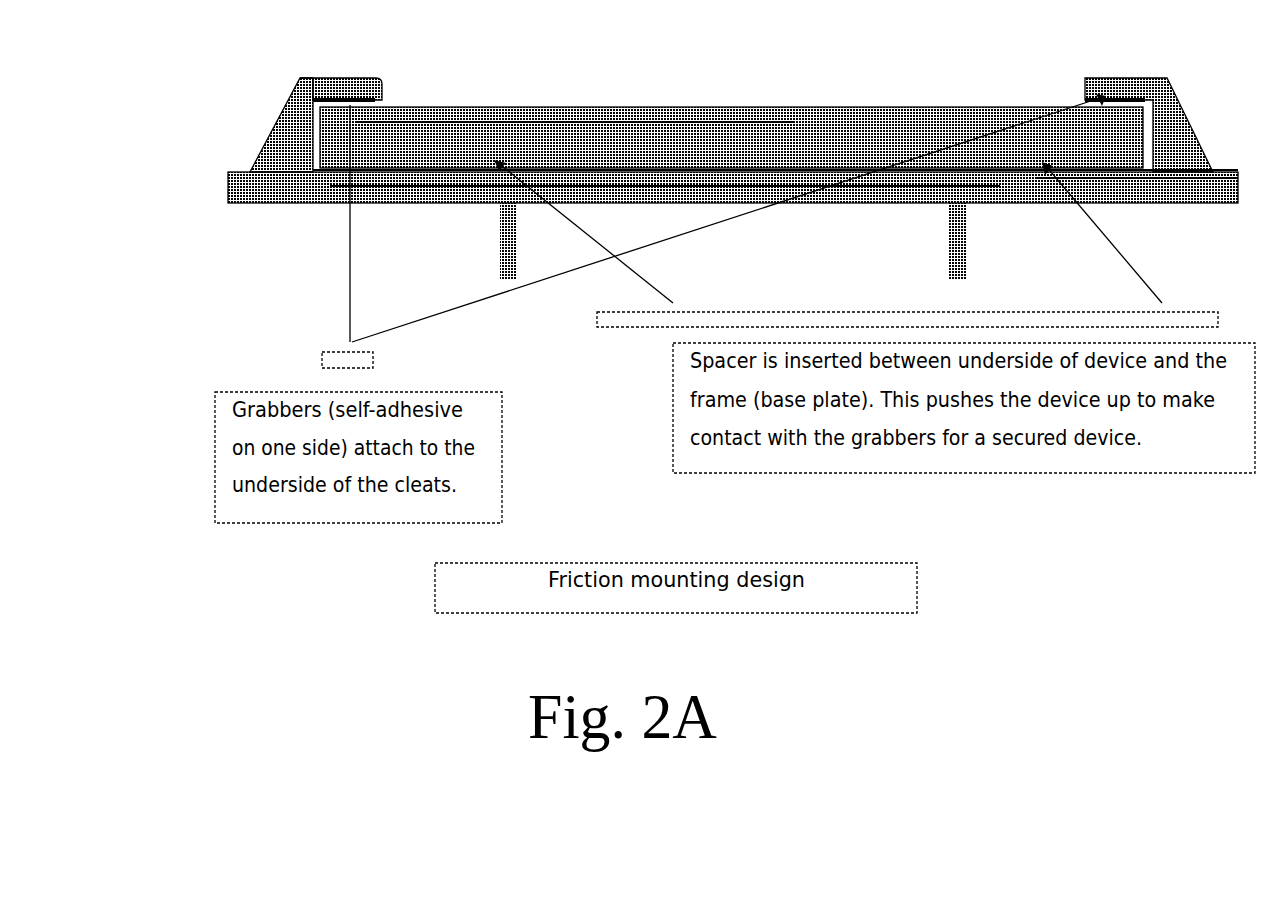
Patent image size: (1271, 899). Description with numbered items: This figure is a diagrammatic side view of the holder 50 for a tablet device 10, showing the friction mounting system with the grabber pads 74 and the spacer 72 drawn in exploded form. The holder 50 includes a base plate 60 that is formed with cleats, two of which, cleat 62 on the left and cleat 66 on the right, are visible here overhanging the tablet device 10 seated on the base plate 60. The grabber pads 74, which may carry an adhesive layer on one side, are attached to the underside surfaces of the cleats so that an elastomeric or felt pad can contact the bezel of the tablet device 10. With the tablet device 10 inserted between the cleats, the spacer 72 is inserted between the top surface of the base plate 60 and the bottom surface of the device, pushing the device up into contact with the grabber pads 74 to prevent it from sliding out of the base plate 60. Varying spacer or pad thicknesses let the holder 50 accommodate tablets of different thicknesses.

The tablet device 10 is at (452, 137).
The holder 50 is at (263, 140).
The base plate 60 is at (230, 212).
The cleat 62 is at (353, 100).
The cleat 66 is at (1108, 78).
The spacer 72 is at (595, 318).
The grabber pads 74 is at (322, 360).